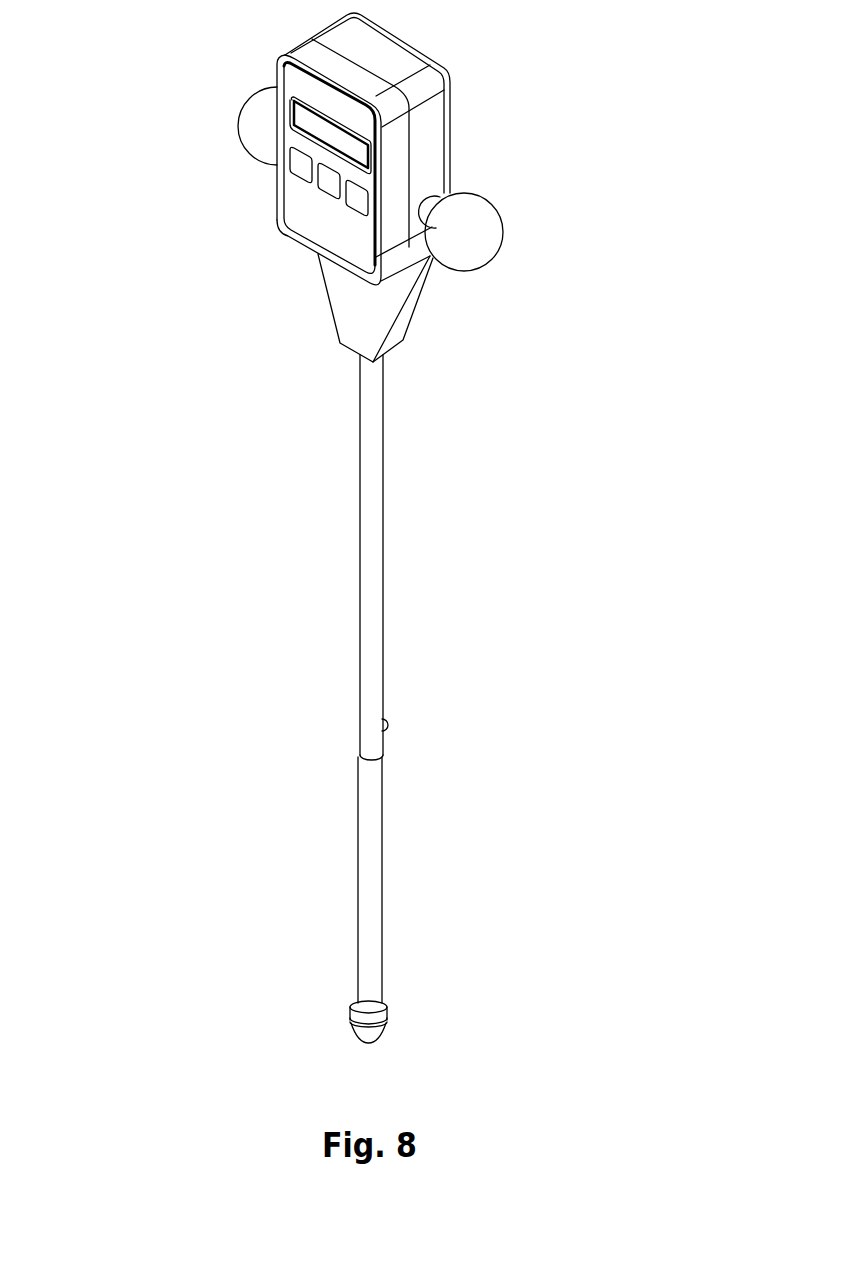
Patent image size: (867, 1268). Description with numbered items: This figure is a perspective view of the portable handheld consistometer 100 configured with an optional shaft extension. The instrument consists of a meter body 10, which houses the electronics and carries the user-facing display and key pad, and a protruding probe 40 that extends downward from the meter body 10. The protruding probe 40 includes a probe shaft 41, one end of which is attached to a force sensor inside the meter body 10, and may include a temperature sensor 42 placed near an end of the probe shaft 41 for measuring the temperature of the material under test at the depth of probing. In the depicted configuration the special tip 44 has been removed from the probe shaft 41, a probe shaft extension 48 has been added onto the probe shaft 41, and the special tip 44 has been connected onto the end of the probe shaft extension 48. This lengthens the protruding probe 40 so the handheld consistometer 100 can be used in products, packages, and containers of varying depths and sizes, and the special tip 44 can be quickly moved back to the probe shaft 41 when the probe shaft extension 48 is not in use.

The handheld consistometer 100 is at (552, 69).
The meter body 10 is at (198, 3).
The protruding probe 40 is at (275, 348).
The probe shaft 41 is at (360, 540).
The temperature sensor 42 is at (388, 723).
The probe shaft extension 48 is at (357, 887).
The special tip 44 is at (350, 1015).